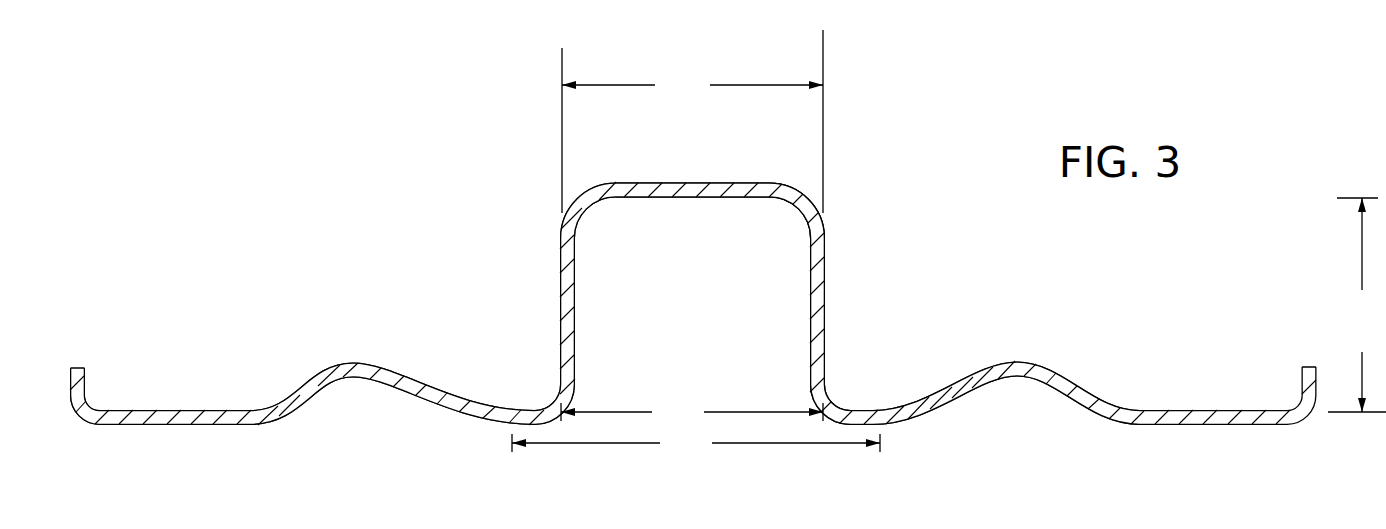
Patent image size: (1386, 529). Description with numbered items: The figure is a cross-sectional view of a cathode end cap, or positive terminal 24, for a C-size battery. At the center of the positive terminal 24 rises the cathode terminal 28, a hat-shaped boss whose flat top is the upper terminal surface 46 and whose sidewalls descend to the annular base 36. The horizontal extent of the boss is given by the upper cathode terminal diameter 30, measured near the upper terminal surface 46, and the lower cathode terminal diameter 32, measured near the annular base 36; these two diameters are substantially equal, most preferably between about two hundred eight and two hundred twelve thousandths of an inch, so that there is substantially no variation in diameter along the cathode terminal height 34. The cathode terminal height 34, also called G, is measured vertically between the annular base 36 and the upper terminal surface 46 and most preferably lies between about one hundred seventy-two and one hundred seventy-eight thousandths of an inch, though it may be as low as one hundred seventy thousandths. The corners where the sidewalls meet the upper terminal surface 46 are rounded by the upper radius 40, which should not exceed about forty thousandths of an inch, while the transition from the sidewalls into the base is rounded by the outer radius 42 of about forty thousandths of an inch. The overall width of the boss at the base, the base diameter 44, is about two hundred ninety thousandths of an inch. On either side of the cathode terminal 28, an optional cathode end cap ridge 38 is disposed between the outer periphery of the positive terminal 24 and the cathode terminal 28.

The positive terminal 24 is at (428, 155).
The cathode terminal 28 is at (850, 260).
The upper cathode terminal diameter 30 is at (692, 121).
The lower cathode terminal diameter 32 is at (692, 412).
The cathode terminal height 34 is at (1357, 305).
The annular base 36 is at (205, 410).
The cathode end cap ridge 38 is at (353, 363).
The upper radius 40 is at (790, 211).
The outer radius 42 is at (857, 399).
The base diameter 44 is at (696, 443).
The upper terminal surface 46 is at (727, 178).